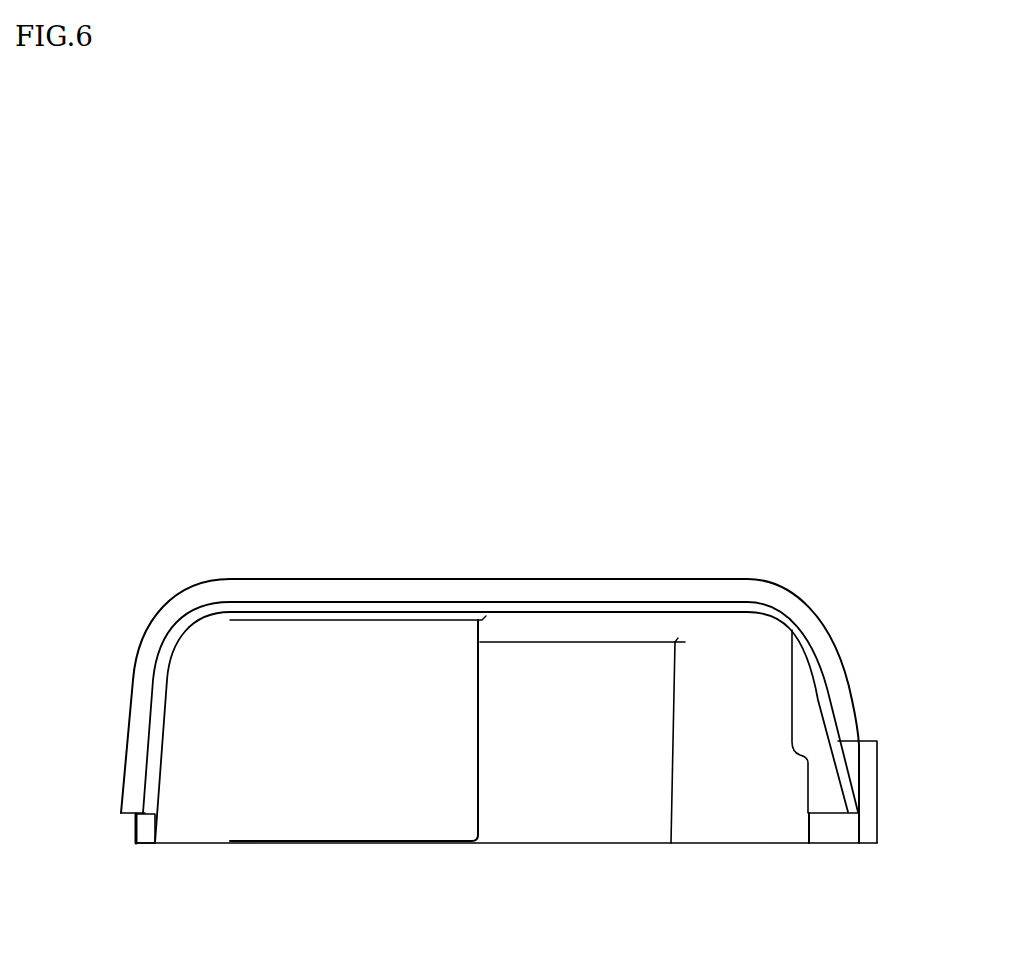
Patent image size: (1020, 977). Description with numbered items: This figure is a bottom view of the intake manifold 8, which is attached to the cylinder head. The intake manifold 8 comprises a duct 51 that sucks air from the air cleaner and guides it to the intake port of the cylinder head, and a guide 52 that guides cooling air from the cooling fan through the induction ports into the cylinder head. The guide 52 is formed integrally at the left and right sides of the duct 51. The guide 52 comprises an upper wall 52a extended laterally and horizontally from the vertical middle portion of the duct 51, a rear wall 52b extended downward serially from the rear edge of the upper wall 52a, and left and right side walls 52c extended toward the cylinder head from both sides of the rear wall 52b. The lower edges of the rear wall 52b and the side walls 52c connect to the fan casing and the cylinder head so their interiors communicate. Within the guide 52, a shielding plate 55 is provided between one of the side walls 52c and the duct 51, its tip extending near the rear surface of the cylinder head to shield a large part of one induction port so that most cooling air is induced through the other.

The intake manifold 8 is at (717, 477).
The guide 52 is at (168, 598).
The upper wall 52a is at (737, 845).
The rear wall 52b is at (410, 602).
The side walls 52c is at (152, 721).
The shielding plate 55 is at (326, 825).
The duct 51 is at (557, 816).